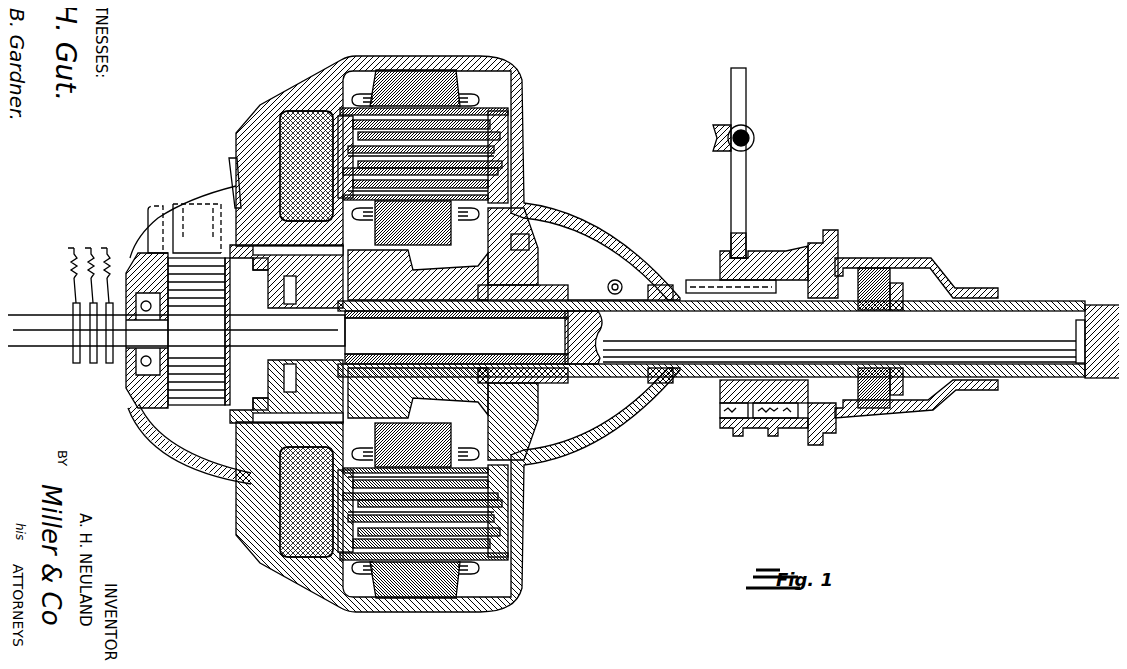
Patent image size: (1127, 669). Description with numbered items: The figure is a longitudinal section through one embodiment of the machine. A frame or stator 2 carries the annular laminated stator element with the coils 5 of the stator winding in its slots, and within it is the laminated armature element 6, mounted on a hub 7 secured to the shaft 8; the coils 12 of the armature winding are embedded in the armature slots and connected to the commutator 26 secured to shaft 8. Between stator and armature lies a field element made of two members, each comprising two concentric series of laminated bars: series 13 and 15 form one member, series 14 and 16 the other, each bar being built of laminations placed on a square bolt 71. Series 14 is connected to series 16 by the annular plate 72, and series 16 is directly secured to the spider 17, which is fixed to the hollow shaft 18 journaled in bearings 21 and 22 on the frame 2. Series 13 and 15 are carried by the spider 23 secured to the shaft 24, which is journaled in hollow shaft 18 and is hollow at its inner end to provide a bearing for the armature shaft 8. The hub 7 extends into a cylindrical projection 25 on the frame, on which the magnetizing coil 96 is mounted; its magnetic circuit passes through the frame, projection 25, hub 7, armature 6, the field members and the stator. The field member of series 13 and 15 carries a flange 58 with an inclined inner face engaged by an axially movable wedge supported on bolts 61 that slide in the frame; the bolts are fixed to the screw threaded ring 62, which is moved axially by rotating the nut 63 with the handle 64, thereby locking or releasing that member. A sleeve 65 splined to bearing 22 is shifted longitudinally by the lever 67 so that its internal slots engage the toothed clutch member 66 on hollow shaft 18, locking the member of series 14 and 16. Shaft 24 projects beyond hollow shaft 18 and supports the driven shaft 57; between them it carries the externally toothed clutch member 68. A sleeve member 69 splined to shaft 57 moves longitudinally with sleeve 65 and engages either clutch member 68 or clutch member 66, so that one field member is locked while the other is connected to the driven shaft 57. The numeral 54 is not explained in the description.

The frame or stator 2 is at (505, 78).
The coils of the stator winding 5 is at (462, 92).
The laminated armature element 6 is at (444, 218).
The hub 7 is at (276, 282).
The shaft 8 is at (435, 60).
The coils of the armature winding 12 is at (473, 193).
The series of laminated bars 13 is at (447, 183).
The series of laminated bars 14 is at (455, 157).
The series of laminated bars 15 is at (487, 129).
The series of laminated bars 16 is at (497, 103).
The spider 17 is at (505, 222).
The sleeve or hollow shaft 18 is at (537, 295).
The bearing 21 is at (525, 285).
The bearing 22 is at (688, 283).
The spider 23 is at (518, 237).
The shaft 24 is at (546, 339).
The cylindrical projection 25 is at (238, 222).
The commutator 26 is at (175, 357).
The pole piece 54 is at (358, 245).
The driven shaft 57 is at (1058, 300).
The flange 58 is at (262, 212).
The bolts 61 is at (253, 246).
The screw threaded ring 62 is at (258, 263).
The nut 63 is at (227, 240).
The handle 64 is at (220, 160).
The sleeve 65 is at (760, 245).
The clutch member 66 is at (806, 275).
The lever 67 is at (738, 180).
The clutch member 68 is at (870, 270).
The sleeve member 69 is at (928, 255).
The bolt 71 is at (480, 523).
The annular plate 72 is at (337, 127).
The magnetizing coil 96 is at (293, 168).